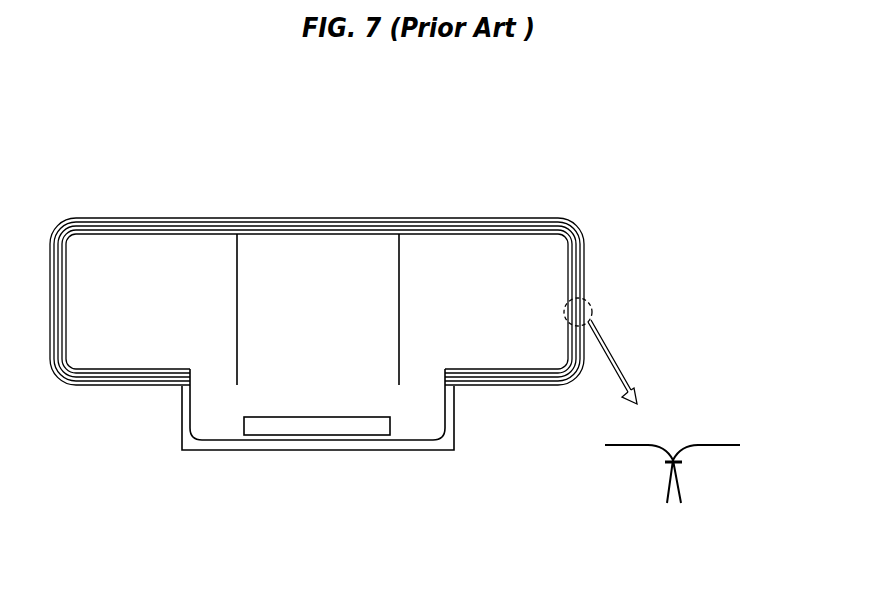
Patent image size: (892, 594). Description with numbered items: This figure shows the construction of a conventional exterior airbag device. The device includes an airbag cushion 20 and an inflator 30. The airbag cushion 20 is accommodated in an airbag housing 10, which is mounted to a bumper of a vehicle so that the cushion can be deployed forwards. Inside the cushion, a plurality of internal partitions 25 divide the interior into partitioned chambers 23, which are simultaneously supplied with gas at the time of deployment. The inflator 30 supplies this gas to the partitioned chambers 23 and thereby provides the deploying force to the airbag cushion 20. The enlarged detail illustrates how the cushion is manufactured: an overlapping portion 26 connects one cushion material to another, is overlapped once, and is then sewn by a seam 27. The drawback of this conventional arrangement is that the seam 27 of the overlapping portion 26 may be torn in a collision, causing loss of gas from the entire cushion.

The airbag housing 10 is at (180, 426).
The partitioned chambers 23 is at (146, 262).
The internal partitions 25 is at (237, 288).
The inflator 30 is at (277, 428).
The airbag cushion 20 is at (706, 445).
The overlapping portion 26 is at (667, 483).
The seam 27 is at (682, 462).